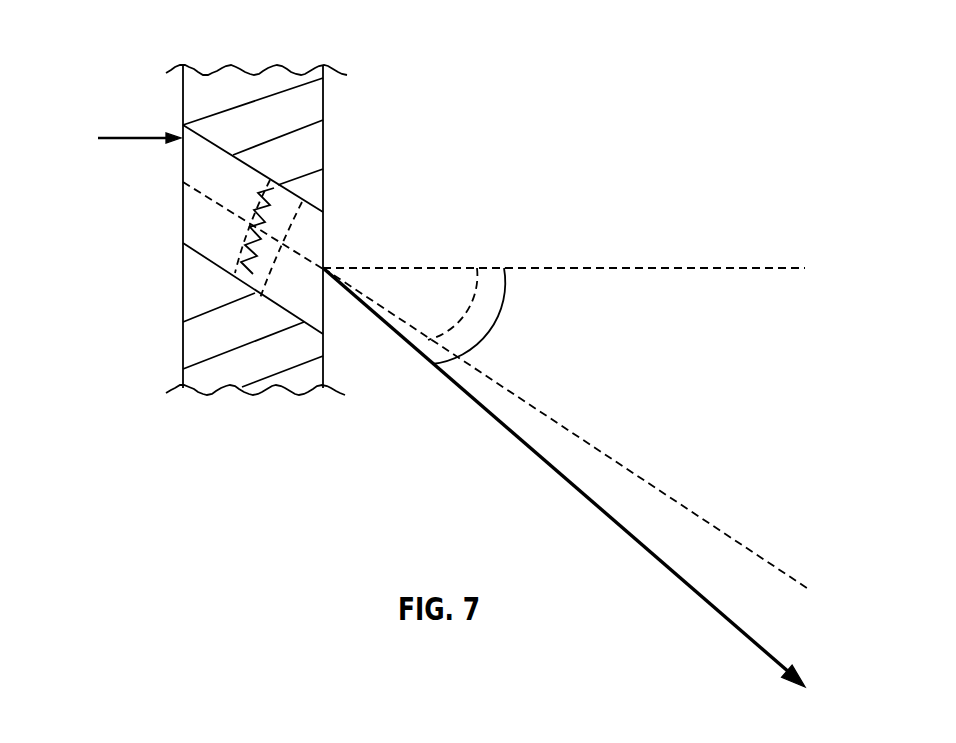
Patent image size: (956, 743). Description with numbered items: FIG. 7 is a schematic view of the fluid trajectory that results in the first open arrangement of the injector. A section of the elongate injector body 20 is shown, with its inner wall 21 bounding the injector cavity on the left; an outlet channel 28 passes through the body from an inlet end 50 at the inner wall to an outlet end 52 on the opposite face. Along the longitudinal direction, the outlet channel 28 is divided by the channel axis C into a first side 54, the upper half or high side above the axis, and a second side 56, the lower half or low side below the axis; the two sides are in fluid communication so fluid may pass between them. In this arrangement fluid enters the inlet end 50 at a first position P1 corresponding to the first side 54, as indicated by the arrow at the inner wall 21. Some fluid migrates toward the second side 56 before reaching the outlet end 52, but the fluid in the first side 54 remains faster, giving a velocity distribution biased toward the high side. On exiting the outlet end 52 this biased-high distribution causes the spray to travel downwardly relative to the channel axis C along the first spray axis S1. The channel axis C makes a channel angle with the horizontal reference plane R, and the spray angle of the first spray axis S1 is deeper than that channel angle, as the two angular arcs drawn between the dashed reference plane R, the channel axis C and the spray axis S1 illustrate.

The injector body 20 is at (233, 77).
The inner wall 21 is at (183, 341).
The outlet channel 28 is at (288, 280).
The inlet end 50 is at (180, 205).
The outlet end 52 is at (303, 228).
The first side 54 is at (208, 168).
The second side 56 is at (207, 228).
The first position P1 is at (122, 125).
The reference plane R is at (550, 267).
The channel axis C is at (628, 470).
The first spray axis S1 is at (628, 540).